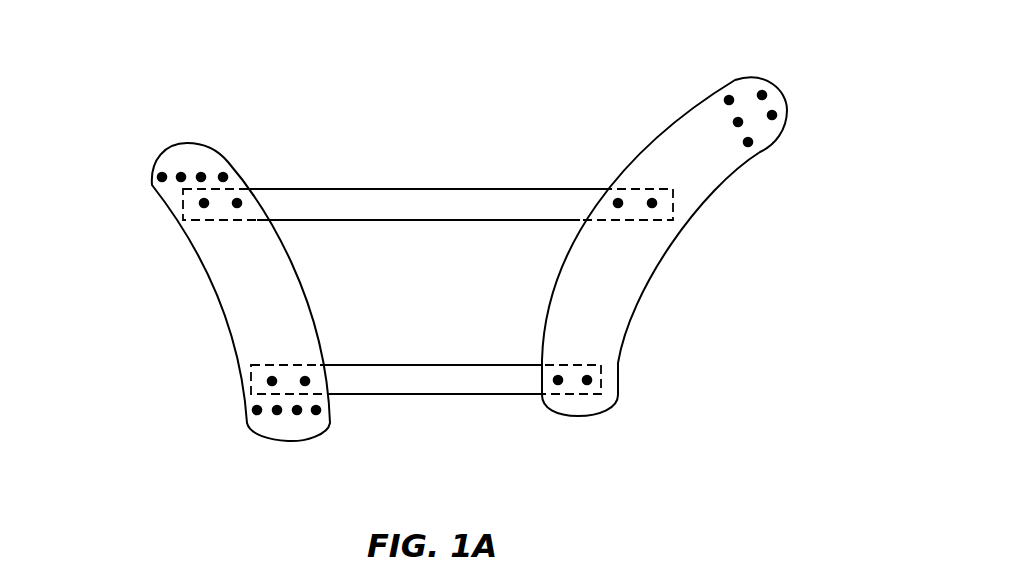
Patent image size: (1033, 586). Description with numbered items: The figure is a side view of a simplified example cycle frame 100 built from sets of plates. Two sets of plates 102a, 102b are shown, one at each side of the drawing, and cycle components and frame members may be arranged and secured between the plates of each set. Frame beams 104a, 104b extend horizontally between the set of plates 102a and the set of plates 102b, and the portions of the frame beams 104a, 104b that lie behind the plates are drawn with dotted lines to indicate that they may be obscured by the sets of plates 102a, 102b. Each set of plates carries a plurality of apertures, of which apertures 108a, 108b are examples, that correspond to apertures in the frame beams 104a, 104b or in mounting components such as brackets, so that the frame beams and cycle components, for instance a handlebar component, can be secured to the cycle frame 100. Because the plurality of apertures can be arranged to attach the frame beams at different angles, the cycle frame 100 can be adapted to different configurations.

The cycle frame 100 is at (134, 118).
The set of plates 102a is at (220, 290).
The set of plates 102b is at (663, 250).
The frame beam 104a is at (418, 395).
The frame beam 104b is at (402, 189).
The aperture 108a is at (772, 115).
The aperture 108b is at (204, 203).